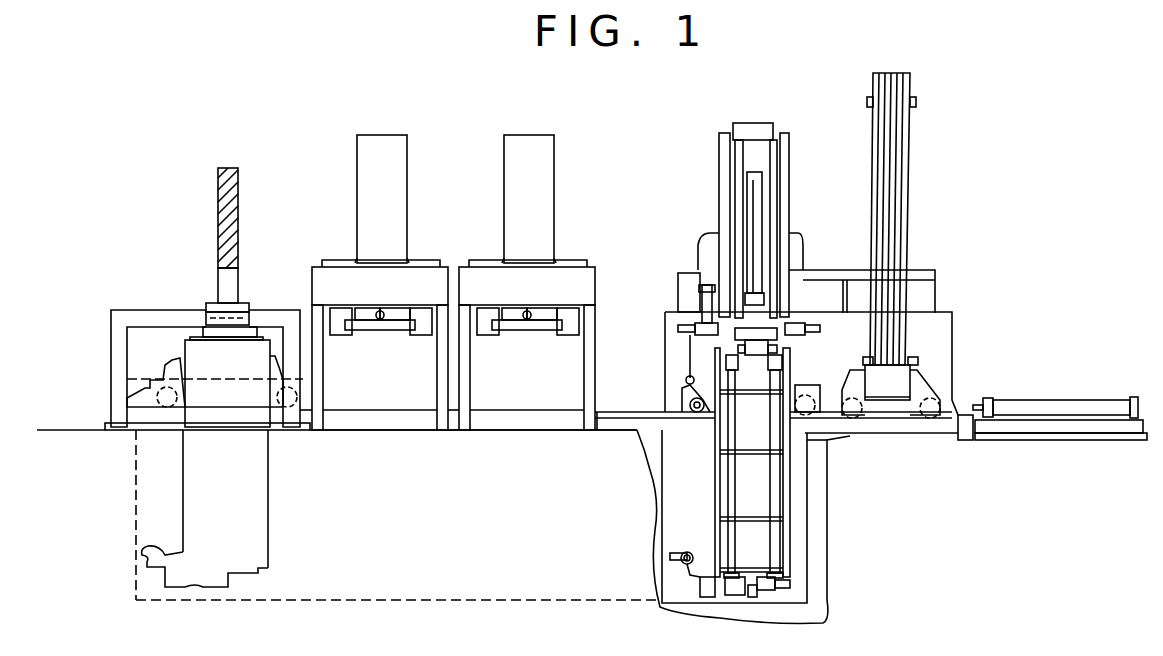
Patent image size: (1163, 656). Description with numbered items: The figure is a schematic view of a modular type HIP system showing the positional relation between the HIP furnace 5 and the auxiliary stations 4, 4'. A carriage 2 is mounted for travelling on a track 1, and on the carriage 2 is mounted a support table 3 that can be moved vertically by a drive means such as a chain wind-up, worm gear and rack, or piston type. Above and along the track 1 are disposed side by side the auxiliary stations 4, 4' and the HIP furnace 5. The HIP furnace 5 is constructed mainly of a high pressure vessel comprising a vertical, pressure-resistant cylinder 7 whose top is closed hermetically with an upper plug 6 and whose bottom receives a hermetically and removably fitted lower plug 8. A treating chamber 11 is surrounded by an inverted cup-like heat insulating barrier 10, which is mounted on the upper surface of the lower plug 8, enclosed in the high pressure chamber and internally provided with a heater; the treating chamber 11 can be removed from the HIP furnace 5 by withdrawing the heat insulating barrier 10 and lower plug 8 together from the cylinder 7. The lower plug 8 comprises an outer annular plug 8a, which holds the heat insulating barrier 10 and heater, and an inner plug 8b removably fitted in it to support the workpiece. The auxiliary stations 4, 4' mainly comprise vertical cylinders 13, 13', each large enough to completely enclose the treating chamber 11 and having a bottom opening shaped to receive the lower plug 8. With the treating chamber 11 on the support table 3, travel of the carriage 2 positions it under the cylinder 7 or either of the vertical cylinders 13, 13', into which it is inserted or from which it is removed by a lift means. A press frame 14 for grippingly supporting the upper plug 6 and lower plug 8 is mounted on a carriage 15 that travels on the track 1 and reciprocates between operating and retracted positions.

The track 1 is at (514, 415).
The carriage 2 is at (818, 405).
The support table 3 is at (715, 432).
The auxiliary station 4 is at (382, 177).
The auxiliary station 4' is at (529, 177).
The HIP furnace 5 is at (717, 197).
The upper plug 6 is at (757, 128).
The vertical, pressure-resistant cylinder 7 is at (728, 163).
The lower plug 8 is at (728, 338).
The outer annular plug 8a is at (712, 302).
The inner plug 8b is at (750, 292).
The heat insulating barrier 10 is at (762, 205).
The treating chamber 11 is at (757, 183).
The vertical cylinder 13 is at (385, 300).
The vertical cylinder 13' is at (534, 300).
The press frame 14 is at (905, 160).
The carriage 15 is at (918, 390).